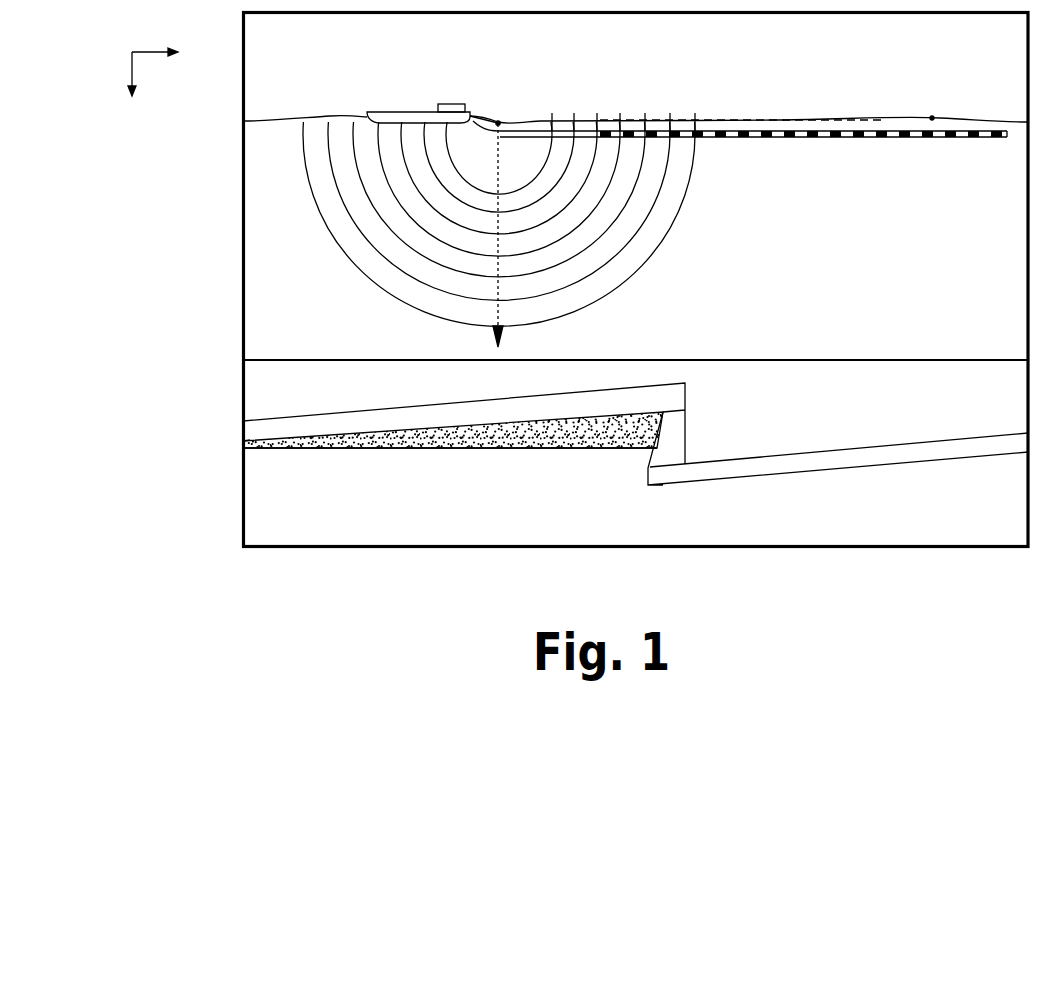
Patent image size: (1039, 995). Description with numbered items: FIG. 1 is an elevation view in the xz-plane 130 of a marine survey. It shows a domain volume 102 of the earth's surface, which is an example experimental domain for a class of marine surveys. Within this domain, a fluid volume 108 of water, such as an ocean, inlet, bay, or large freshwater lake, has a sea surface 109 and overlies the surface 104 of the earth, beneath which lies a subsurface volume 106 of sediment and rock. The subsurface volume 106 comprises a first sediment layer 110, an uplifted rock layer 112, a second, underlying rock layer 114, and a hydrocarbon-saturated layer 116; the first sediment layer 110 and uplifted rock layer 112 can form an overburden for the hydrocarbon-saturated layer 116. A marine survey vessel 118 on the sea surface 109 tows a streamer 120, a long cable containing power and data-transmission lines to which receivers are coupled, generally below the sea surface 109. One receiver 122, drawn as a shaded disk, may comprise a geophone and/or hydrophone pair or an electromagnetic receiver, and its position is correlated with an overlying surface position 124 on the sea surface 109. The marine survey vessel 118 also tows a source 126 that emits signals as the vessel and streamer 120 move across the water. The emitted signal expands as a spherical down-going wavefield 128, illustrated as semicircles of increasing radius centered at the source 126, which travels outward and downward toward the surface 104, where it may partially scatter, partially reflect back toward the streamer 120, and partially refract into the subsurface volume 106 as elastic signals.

The domain volume 102 is at (148, 182).
The surface of the earth 104 is at (300, 359).
The subsurface volume 106 is at (263, 381).
The fluid volume 108 is at (263, 266).
The sea surface 109 is at (770, 118).
The first sediment layer 110 is at (893, 420).
The uplifted rock layer 112 is at (263, 438).
The second underlying rock layer 114 is at (366, 537).
The hydrocarbon-saturated layer 116 is at (462, 449).
The marine survey vessel 118 is at (410, 110).
The streamer 120 is at (822, 172).
The receiver 122 is at (935, 139).
The surface position 124 is at (932, 117).
The source 126 is at (498, 121).
The down-going wavefield 128 is at (664, 226).
The xz-plane 130 is at (128, 52).